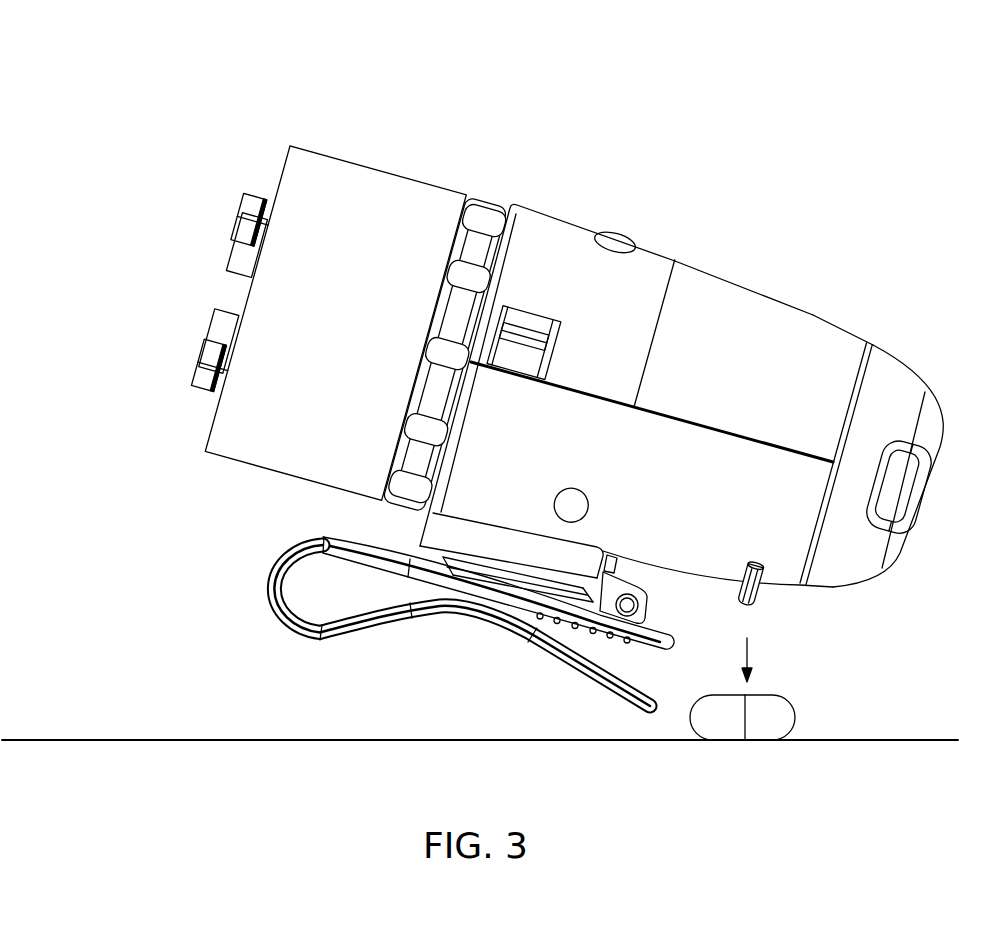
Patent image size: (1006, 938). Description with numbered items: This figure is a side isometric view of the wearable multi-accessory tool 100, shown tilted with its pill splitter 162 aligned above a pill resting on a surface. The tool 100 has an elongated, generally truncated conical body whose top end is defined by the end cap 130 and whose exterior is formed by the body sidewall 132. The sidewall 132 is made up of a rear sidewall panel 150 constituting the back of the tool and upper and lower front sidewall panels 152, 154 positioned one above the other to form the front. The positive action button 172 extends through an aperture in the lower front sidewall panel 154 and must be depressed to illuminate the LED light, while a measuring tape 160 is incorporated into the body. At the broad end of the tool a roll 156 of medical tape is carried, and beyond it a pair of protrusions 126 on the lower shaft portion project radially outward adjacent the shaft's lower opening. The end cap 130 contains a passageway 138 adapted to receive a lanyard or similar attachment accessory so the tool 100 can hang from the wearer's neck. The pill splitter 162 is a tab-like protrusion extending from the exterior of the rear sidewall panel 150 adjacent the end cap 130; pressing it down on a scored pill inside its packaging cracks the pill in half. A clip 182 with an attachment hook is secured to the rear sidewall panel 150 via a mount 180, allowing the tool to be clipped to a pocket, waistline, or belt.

The wearable multi-accessory tool 100 is at (742, 102).
The protrusions 126 is at (237, 227).
The end cap 130 is at (905, 355).
The body sidewall 132 is at (817, 308).
The passageway 138 is at (897, 481).
The rear sidewall panel 150 is at (674, 571).
The upper front sidewall panel 152 is at (738, 298).
The lower front sidewall panel 154 is at (561, 222).
The roll of medical tape 156 is at (333, 151).
The measuring tape 160 is at (552, 360).
The pill splitter 162 is at (768, 593).
The positive action button 172 is at (640, 232).
The clip mount 180 is at (443, 531).
The clip 182 is at (250, 570).